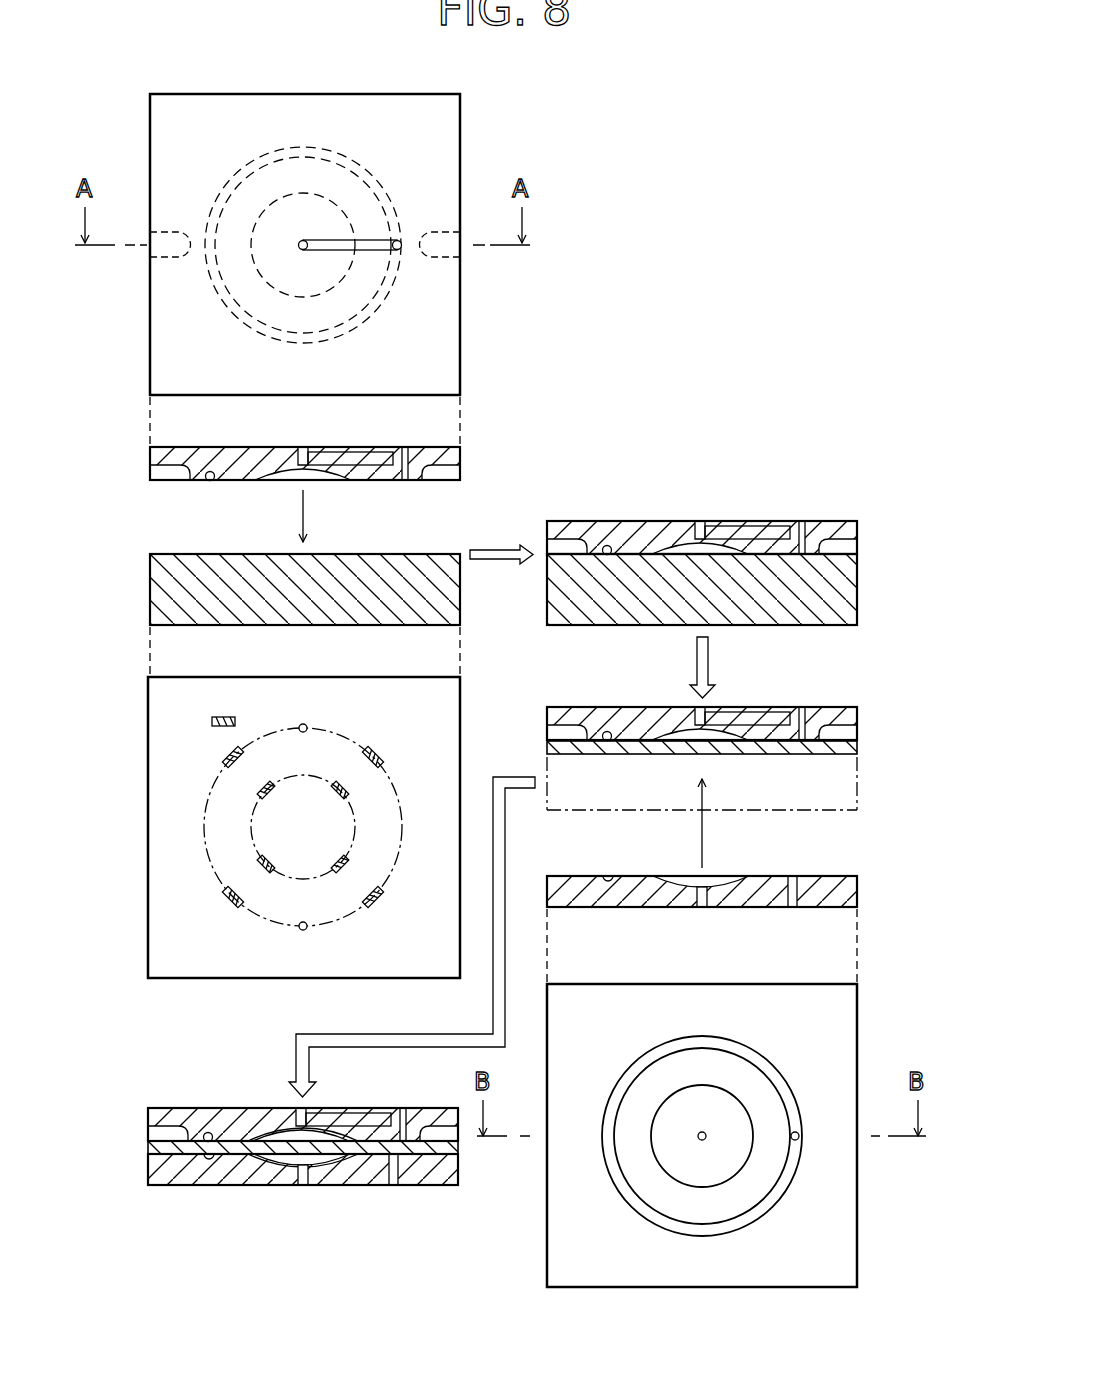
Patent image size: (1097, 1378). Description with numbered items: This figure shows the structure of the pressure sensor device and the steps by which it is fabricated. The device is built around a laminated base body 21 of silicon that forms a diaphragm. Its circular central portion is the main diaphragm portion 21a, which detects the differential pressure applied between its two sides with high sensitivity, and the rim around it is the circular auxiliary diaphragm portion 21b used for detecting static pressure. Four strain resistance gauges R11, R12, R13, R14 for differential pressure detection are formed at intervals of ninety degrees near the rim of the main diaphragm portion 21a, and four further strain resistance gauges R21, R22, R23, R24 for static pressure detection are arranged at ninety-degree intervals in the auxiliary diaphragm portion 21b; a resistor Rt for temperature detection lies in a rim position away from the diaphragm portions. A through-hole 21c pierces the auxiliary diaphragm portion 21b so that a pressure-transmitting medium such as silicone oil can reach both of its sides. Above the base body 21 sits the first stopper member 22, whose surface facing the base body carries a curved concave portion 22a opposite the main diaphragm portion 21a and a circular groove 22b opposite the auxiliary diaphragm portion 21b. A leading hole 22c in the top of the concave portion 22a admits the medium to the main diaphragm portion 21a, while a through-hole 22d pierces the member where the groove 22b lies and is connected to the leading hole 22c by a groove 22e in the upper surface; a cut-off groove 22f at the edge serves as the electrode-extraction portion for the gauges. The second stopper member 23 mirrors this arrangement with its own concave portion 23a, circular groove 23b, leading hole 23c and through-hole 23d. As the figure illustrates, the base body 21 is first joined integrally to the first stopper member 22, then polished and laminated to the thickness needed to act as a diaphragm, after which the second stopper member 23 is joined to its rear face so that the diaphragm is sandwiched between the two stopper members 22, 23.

The laminated base body 21 is at (146, 711).
The main diaphragm portion 21a is at (270, 829).
The auxiliary diaphragm portion 21b is at (207, 855).
The through-hole 21c is at (303, 724).
The first stopper member 22 is at (147, 129).
The concave portion 22a is at (267, 265).
The circular groove 22b is at (264, 343).
The leading hole 22c is at (304, 250).
The through-hole 22d is at (402, 248).
The groove 22e is at (362, 239).
The cut-off groove 22f is at (150, 250).
The second stopper member 23 is at (860, 894).
The concave portion 23a is at (725, 1162).
The circular groove 23b is at (635, 1199).
The leading hole 23c is at (702, 1141).
The through-hole 23d is at (798, 1140).
The resistor for temperature detection Rt is at (225, 705).
The strain resistance gauge R11 is at (244, 797).
The strain resistance gauge R12 is at (359, 792).
The strain resistance gauge R13 is at (360, 860).
The strain resistance gauge R14 is at (245, 859).
The strain resistance gauge R21 is at (213, 751).
The strain resistance gauge R22 is at (395, 749).
The strain resistance gauge R23 is at (394, 905).
The strain resistance gauge R24 is at (210, 902).